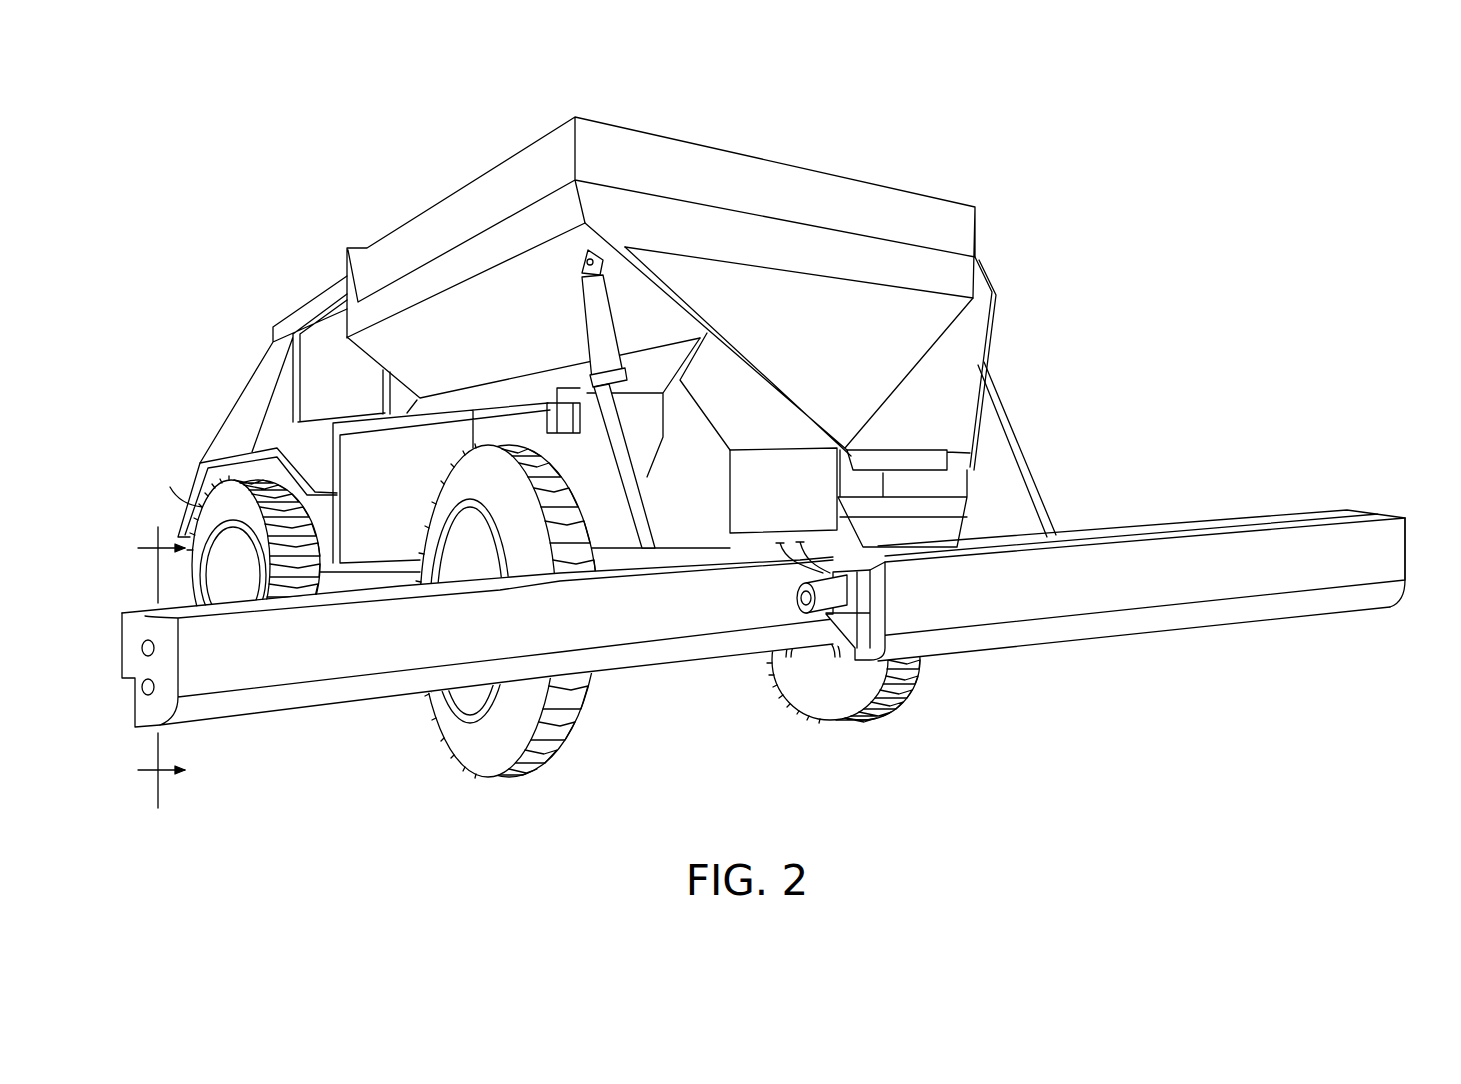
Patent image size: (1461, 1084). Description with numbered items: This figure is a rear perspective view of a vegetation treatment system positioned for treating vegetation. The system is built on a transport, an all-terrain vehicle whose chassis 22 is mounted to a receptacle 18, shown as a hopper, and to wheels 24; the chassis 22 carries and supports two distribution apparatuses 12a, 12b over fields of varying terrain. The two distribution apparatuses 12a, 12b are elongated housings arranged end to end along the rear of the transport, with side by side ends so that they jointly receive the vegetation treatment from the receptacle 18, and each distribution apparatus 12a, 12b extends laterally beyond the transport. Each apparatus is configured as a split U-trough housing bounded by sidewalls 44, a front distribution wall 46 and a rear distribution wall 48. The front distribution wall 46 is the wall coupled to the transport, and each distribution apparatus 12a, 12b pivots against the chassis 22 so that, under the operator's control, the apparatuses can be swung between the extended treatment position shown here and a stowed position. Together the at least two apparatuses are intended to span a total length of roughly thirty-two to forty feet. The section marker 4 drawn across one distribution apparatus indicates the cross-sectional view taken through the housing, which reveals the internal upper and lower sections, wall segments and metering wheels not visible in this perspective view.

The receptacle 18 is at (915, 190).
The chassis 22 is at (360, 580).
The wheels 24 is at (208, 518).
The distribution apparatus 12a is at (742, 610).
The distribution apparatus 12b is at (1141, 542).
The sidewalls 44 is at (137, 660).
The front distribution wall 46 is at (1257, 517).
The rear distribution wall 48 is at (1203, 583).
The section line 4- 4 is at (160, 667).